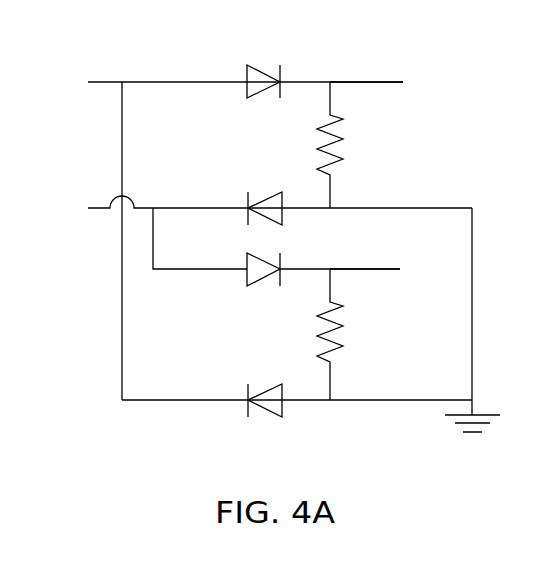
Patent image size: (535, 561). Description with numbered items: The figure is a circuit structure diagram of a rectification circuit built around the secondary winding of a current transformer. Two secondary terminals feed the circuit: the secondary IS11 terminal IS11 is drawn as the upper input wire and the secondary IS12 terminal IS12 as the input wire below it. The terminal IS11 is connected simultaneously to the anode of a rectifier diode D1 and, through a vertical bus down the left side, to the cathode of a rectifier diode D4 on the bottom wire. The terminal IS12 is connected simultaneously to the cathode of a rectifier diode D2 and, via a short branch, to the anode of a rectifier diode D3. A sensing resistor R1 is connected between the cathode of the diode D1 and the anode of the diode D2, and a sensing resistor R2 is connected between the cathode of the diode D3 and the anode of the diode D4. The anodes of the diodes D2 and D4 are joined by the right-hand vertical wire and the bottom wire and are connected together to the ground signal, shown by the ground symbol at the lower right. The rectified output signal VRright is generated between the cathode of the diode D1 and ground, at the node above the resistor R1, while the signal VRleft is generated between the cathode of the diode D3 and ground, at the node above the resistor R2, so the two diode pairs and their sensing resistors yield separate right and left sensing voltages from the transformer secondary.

The secondary IS11 terminal IS11 is at (215, 82).
The secondary IS12 terminal IS12 is at (248, 207).
The rectifier diode D1 is at (263, 60).
The rectifier diode D2 is at (265, 188).
The rectifier diode D3 is at (323, 292).
The rectifier diode D4 is at (265, 422).
The sensing resistor R1 is at (357, 145).
The sensing resistor R2 is at (352, 334).
The signal VRright is at (366, 66).
The signal VRleft is at (365, 253).